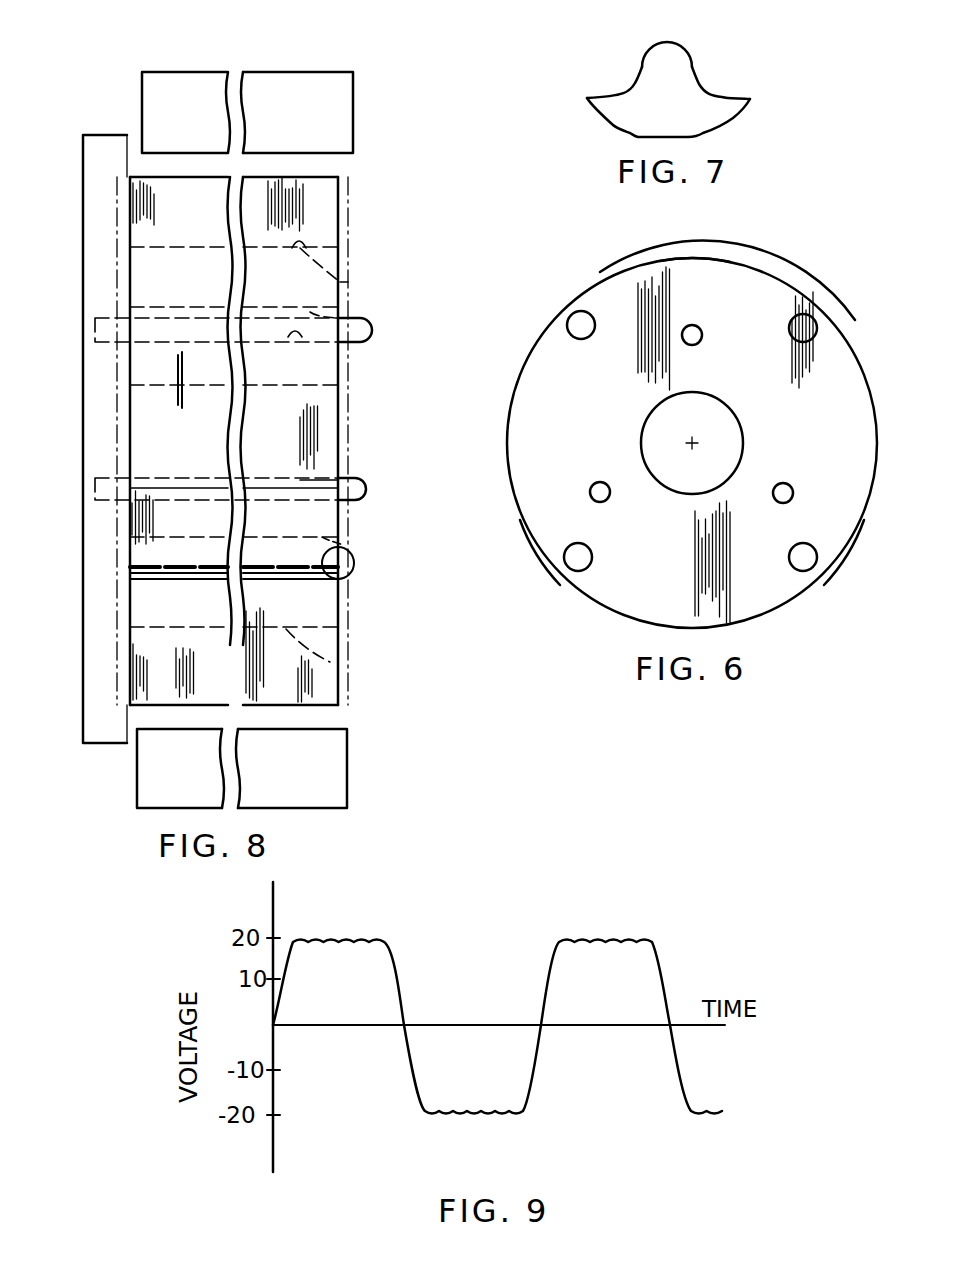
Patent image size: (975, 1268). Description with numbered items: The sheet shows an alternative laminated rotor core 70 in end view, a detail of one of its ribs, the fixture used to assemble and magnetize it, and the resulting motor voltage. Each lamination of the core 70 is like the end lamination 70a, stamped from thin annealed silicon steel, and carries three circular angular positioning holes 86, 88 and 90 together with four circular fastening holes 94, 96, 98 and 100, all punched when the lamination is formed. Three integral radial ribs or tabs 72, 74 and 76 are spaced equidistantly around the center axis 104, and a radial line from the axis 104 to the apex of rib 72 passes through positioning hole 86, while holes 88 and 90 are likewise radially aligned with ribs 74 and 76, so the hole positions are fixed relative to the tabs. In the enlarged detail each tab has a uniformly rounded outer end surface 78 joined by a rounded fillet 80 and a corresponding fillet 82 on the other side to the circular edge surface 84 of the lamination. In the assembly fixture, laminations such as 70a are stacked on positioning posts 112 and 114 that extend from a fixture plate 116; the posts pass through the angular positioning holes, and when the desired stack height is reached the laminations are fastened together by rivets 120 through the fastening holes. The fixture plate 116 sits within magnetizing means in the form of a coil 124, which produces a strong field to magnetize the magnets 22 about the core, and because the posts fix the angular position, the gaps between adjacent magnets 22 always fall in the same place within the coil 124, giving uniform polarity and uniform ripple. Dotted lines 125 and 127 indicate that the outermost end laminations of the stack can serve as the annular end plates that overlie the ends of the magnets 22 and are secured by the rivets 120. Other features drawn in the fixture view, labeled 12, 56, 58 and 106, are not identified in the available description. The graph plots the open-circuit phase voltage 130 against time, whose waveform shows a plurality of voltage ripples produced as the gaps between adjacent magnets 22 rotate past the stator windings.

In FIG. 8, the stator 12 is at (330, 655).
In FIG. 8, the magnets 22 is at (328, 207).
In FIG. 8, the first stop 56 is at (330, 543).
In FIG. 8, the second stop 58 is at (318, 572).
In FIG. 6, the rotor core 70 is at (877, 414).
In FIG. 6, the end lamination 70a is at (855, 487).
In FIG. 7, the radial rib 72 is at (648, 74).
In FIG. 6, the radial rib 72 is at (693, 258).
In FIG. 8, the radial rib 72 is at (318, 247).
In FIG. 7, the radial rib 74 is at (648, 74).
In FIG. 6, the radial rib 74 is at (852, 537).
In FIG. 7, the radial rib 76 is at (648, 74).
In FIG. 6, the radial rib 76 is at (532, 537).
In FIG. 7, the rounded outer end surface 78 is at (678, 45).
In FIG. 7, the rounded fillet 80 is at (635, 82).
In FIG. 7, the pin shoulder 82 is at (697, 77).
In FIG. 7, the circular edge surface 84 is at (698, 112).
In FIG. 6, the circular edge surface 84 is at (863, 373).
In FIG. 6, the angular positioning hole 86 is at (694, 332).
In FIG. 8, the angular positioning hole 86 is at (300, 337).
In FIG. 6, the angular positioning hole 88 is at (792, 487).
In FIG. 6, the angular positioning hole 90 is at (602, 483).
In FIG. 8, the angular positioning hole 90 is at (340, 480).
In FIG. 6, the fastening hole 94 is at (574, 318).
In FIG. 8, the fastening hole 94 is at (343, 318).
In FIG. 6, the fastening hole 96 is at (808, 322).
In FIG. 6, the fastening hole 98 is at (812, 566).
In FIG. 6, the fastening hole 100 is at (573, 568).
In FIG. 8, the fastening hole 100 is at (345, 541).
In FIG. 6, the center axis 104 is at (694, 441).
In FIG. 8, the hidden pin portion 106 is at (352, 280).
In FIG. 8, the positioning post 112 is at (373, 332).
In FIG. 8, the positioning post 114 is at (367, 488).
In FIG. 8, the fixture plate 116 is at (95, 510).
In FIG. 8, the rivet 120 is at (354, 563).
In FIG. 8, the coil 124 is at (282, 83).
In FIG. 8, the dotted line 125 is at (347, 632).
In FIG. 8, the dotted line 127 is at (115, 683).
In FIG. 9, the phase voltage 130 is at (627, 941).